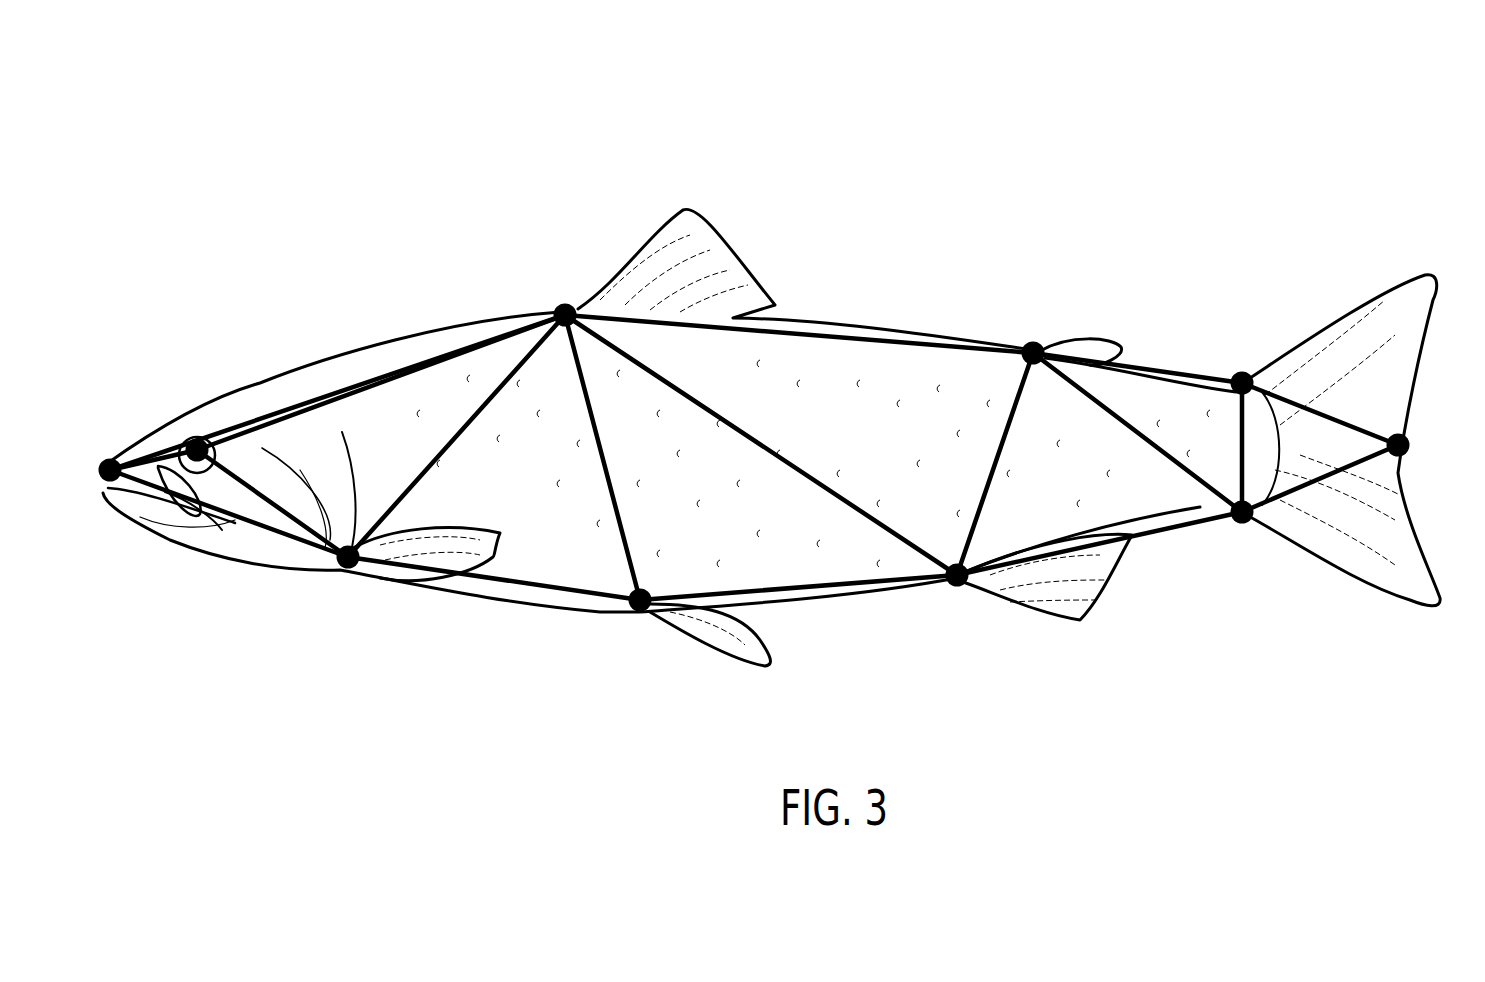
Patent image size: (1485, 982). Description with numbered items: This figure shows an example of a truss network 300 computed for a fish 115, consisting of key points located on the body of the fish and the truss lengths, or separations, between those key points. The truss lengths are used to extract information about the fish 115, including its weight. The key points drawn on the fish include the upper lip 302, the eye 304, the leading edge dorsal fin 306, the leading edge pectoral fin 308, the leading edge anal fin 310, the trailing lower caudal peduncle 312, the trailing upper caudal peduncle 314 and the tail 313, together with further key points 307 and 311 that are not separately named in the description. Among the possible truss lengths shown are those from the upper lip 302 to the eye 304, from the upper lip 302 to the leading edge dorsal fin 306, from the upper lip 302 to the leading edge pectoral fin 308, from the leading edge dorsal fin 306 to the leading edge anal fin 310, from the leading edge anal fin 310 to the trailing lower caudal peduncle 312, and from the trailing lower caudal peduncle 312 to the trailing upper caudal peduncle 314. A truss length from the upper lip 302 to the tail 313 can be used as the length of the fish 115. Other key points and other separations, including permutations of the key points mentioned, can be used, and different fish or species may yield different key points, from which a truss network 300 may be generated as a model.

The truss network 300 is at (249, 94).
The fish 115 is at (381, 344).
The upper lip 302 is at (108, 459).
The eye 304 is at (200, 437).
The leading edge dorsal fin 306 is at (556, 308).
The pelvic fin keypoint 307 is at (637, 612).
The leading edge pectoral fin 308 is at (338, 565).
The leading edge anal fin 310 is at (955, 588).
The adipose fin keypoint 311 is at (1031, 342).
The trailing lower caudal peduncle 312 is at (1242, 524).
The tail 313 is at (1401, 458).
The trailing upper caudal peduncle 314 is at (1240, 375).